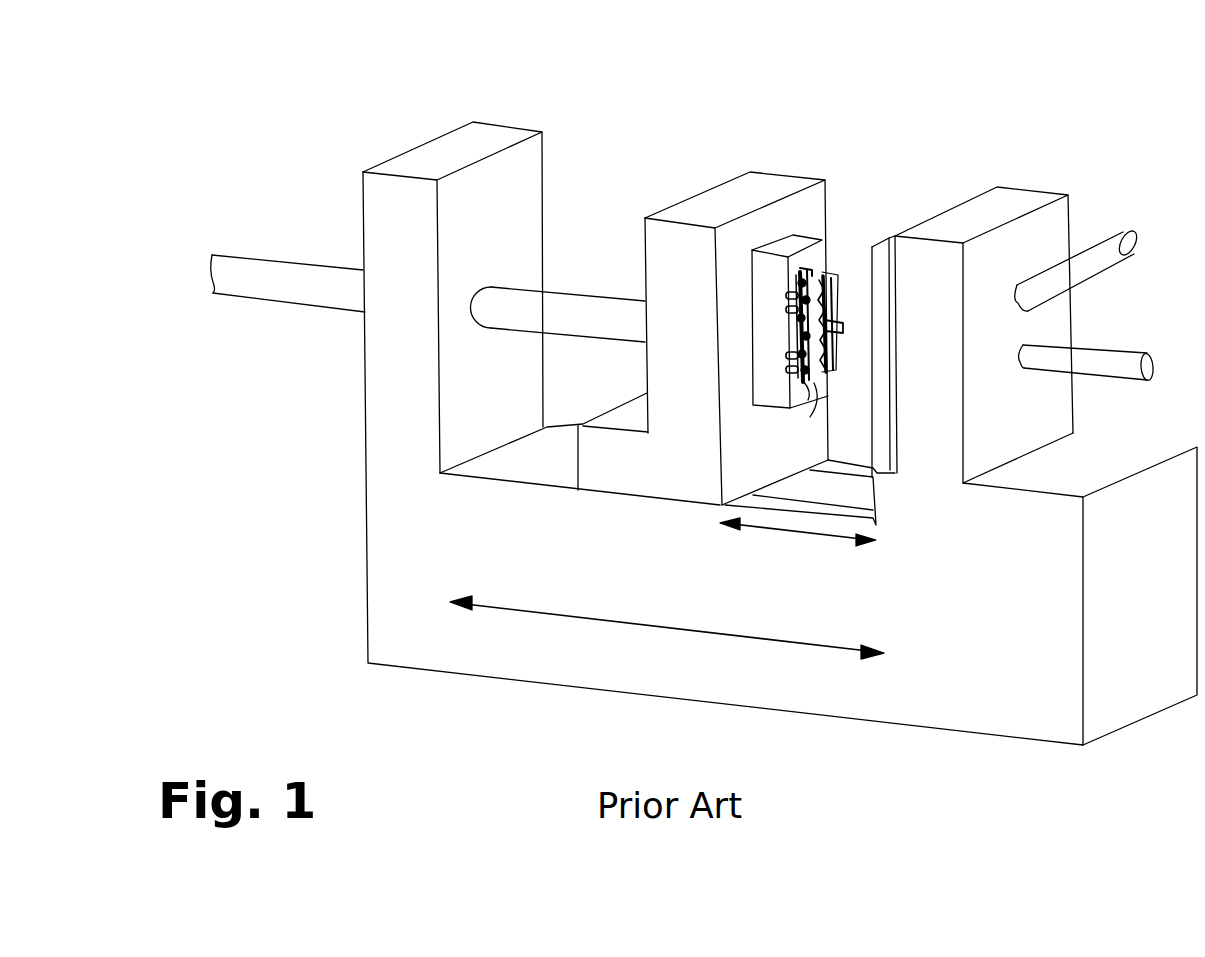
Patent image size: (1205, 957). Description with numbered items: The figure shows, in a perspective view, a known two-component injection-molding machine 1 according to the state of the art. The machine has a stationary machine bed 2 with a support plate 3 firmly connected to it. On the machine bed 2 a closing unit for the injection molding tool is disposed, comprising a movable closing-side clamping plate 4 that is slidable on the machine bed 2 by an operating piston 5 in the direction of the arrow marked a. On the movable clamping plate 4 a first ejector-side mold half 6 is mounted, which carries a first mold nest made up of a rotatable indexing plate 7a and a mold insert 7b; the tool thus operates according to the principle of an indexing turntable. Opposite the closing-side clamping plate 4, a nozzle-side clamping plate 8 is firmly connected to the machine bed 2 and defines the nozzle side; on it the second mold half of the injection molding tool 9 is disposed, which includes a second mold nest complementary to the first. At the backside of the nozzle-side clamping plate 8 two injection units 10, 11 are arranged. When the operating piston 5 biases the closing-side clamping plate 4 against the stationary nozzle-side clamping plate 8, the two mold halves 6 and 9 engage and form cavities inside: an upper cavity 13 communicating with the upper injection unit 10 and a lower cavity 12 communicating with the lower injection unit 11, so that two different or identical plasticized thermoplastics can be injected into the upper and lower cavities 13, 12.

The injection-molding machine 1 is at (518, 702).
The machine bed 2 is at (915, 702).
The support plate 3 is at (447, 152).
The movable clamping plate 4 is at (753, 185).
The operating piston 5 is at (586, 310).
The first ejector-side mold half 6 is at (797, 237).
The rotatable indexing plate 7a is at (840, 290).
The mold insert 7b is at (812, 272).
The nozzle-side clamping plate 8 is at (1008, 195).
The second mold half of the injection molding tool 9 is at (887, 235).
The upper injection unit 10 is at (1083, 257).
The lower injection unit 11 is at (1110, 360).
The lower cavity 12 is at (810, 417).
The upper cavity 13 is at (798, 279).